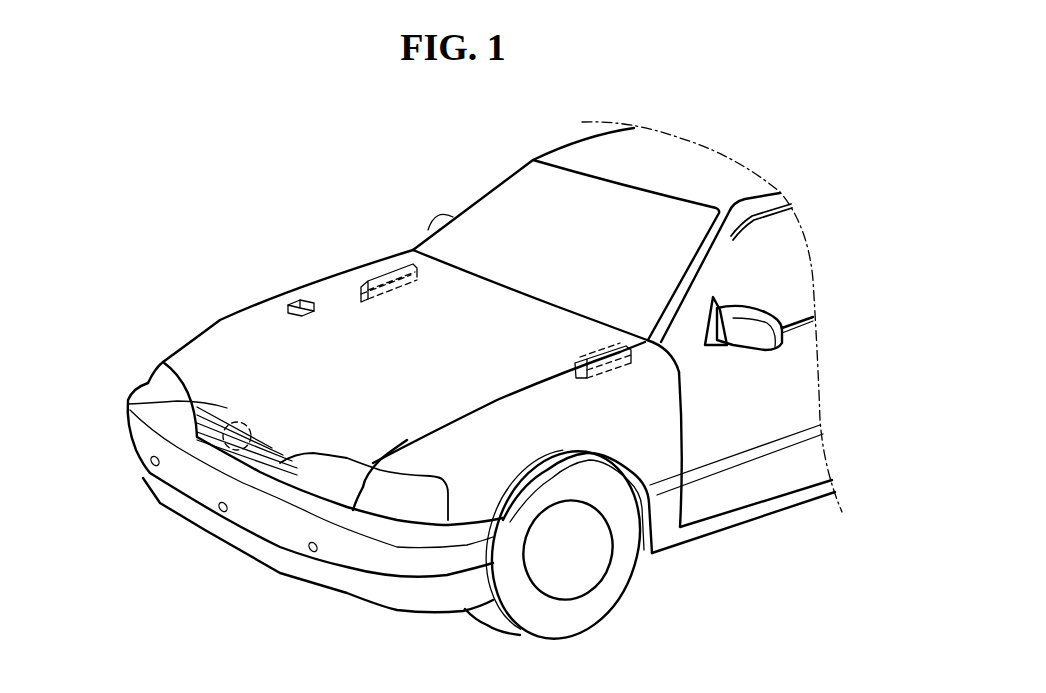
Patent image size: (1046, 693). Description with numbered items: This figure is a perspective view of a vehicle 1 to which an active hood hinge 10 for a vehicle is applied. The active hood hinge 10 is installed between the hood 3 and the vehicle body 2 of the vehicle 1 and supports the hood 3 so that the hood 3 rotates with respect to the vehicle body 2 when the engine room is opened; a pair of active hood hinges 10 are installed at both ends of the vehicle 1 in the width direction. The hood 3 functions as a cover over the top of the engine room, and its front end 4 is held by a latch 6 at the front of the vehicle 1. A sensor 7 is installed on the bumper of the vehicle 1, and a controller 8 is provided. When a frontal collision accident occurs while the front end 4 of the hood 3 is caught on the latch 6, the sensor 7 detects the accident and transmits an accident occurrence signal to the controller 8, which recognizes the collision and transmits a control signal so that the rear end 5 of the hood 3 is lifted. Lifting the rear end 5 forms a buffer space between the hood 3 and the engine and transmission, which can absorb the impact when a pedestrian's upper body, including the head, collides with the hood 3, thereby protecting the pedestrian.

The vehicle 1 is at (268, 210).
The vehicle body 2 is at (645, 442).
The hood 3 is at (193, 338).
The front end of the hood 4 is at (150, 403).
The rear end of the hood 5 is at (510, 303).
The latch 6 is at (228, 452).
The sensor 7 is at (150, 467).
The controller 8 is at (296, 303).
The active hood hinge 10 is at (373, 275).